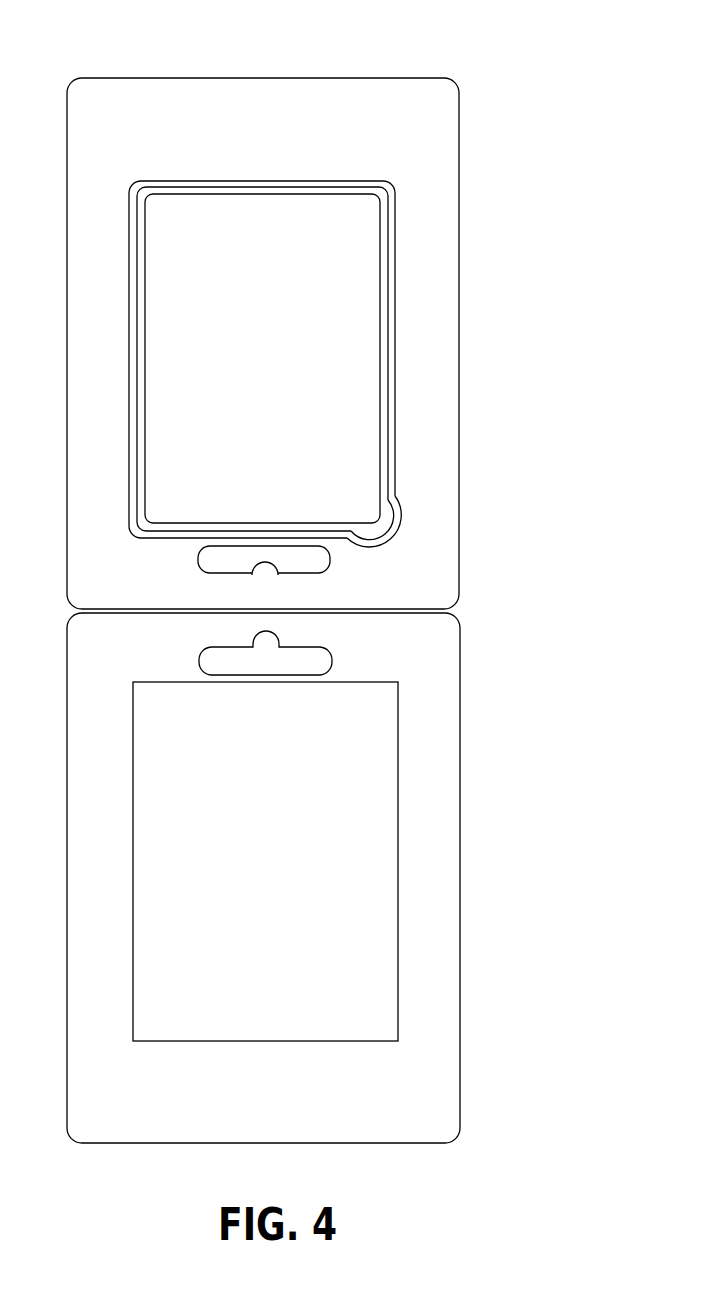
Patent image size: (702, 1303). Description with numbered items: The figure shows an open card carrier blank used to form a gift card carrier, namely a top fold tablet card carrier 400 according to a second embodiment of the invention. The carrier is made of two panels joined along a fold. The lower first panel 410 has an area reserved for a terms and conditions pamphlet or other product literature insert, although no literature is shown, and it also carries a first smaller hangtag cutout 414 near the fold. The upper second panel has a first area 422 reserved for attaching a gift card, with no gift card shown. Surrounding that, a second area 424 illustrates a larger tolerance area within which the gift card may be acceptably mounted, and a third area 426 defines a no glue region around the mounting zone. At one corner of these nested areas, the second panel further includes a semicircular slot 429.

The top fold tablet card carrier 400 is at (316, 578).
The first panel 410 is at (141, 1120).
The first smaller hangtag cutout 414 is at (332, 661).
The first area 422 is at (380, 330).
The second area 424 is at (388, 262).
The third area 426 is at (255, 181).
The semicircular slot 429 is at (402, 505).